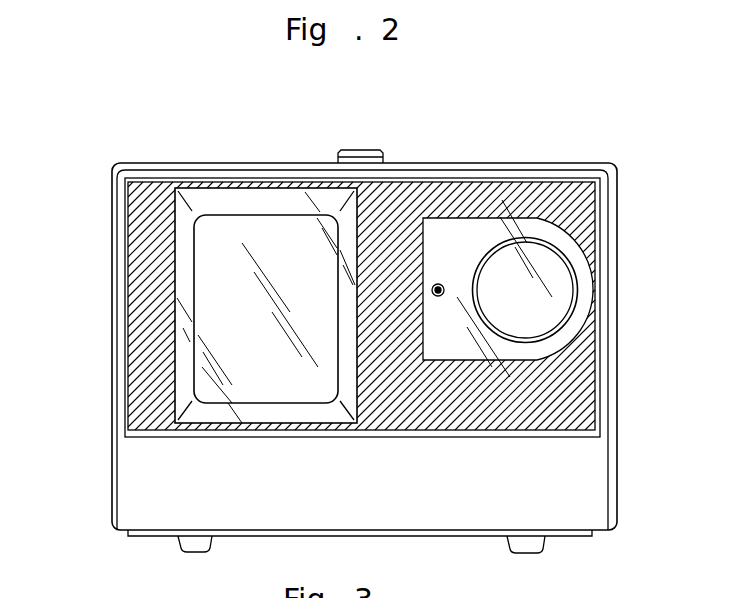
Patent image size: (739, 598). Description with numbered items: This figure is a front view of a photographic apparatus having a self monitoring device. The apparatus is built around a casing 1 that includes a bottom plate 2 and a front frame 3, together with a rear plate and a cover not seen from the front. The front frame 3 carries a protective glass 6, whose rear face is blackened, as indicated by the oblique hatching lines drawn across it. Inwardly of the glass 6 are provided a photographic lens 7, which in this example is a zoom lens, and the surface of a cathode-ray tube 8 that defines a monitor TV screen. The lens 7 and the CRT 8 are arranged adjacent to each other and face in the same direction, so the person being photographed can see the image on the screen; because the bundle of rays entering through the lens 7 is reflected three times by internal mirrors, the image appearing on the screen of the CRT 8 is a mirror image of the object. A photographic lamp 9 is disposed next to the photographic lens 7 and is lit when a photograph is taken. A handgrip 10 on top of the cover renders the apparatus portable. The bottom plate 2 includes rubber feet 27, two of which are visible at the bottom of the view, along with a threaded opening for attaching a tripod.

The casing 1 is at (97, 187).
The bottom plate 2 is at (572, 534).
The front frame 3 is at (593, 470).
The protective glass 6 is at (137, 335).
The photographic lens 7 is at (565, 292).
The cathode-ray tube 8 is at (228, 237).
The photographic lamp 9 is at (438, 284).
The handgrip 10 is at (345, 152).
The rubber feet 27 is at (197, 542).